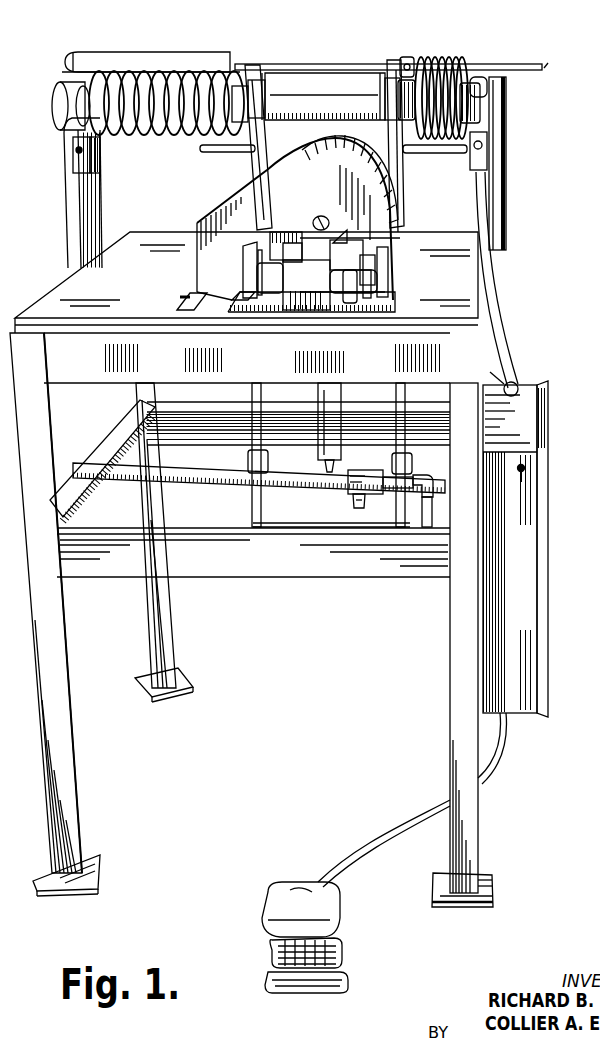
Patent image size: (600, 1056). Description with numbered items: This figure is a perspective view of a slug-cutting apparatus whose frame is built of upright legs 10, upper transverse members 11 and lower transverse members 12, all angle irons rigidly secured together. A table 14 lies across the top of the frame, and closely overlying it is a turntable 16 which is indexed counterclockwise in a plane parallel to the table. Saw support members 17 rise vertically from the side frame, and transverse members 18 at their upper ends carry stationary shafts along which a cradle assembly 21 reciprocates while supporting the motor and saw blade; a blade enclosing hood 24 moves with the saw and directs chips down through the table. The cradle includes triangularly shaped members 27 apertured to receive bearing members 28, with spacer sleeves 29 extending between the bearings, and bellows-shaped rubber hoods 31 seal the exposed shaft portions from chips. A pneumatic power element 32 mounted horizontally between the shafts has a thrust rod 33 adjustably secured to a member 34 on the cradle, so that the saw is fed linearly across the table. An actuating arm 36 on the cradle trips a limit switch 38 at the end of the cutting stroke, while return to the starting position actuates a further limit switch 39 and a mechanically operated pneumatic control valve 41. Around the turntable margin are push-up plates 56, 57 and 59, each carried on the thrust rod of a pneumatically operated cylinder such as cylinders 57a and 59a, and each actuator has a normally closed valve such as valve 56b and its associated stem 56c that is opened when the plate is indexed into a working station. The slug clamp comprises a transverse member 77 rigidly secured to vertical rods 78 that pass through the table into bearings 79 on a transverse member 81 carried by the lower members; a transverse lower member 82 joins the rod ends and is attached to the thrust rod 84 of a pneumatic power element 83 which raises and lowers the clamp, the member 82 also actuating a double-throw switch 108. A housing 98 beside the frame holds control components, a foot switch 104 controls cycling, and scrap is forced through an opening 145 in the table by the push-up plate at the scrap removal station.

The upright legs 10 is at (172, 606).
The upper transverse members 11 is at (284, 374).
The lower transverse members 12 is at (115, 445).
The table 14 is at (124, 300).
The turntable 16 is at (240, 298).
The saw support members 17 is at (70, 215).
The transverse members 18 is at (480, 76).
The cradle assembly 21 is at (420, 188).
The blade enclosing hood 24 is at (238, 210).
The triangularly shaped members 27 is at (255, 168).
The bearing members 28 is at (303, 88).
The spacer sleeves 29 is at (320, 95).
The bellows-shaped rubber hoods 31 is at (172, 140).
The pneumatic power element 32 is at (162, 58).
The thrust rod 33 is at (294, 62).
The member 34 is at (408, 57).
The actuating arm 36 is at (425, 152).
The limit switch 38 is at (490, 150).
The limit switch 39 is at (101, 150).
The pneumatic control valve 41 is at (76, 160).
The push-up plate 56 is at (319, 286).
The normally closed valve 56b is at (357, 242).
The slide pin 56c is at (348, 303).
The push-up plate 57 is at (418, 265).
The pneumatically operated cylinder 57a is at (378, 300).
The push-up plate 59 is at (253, 242).
The pneumatically operated cylinder 59a is at (232, 305).
The transverse member 77 is at (415, 270).
The vertical rods 78 is at (251, 393).
The bearings 79 is at (247, 460).
The transverse member 81 is at (196, 474).
The transverse lower member 82 is at (325, 488).
The pneumatic power element 83 is at (317, 450).
The thrust rod 84 is at (346, 504).
The housing 98 is at (518, 566).
The foot switch 104 is at (303, 882).
The double-throw double-pull switch 108 is at (366, 505).
The opening 145 is at (200, 307).